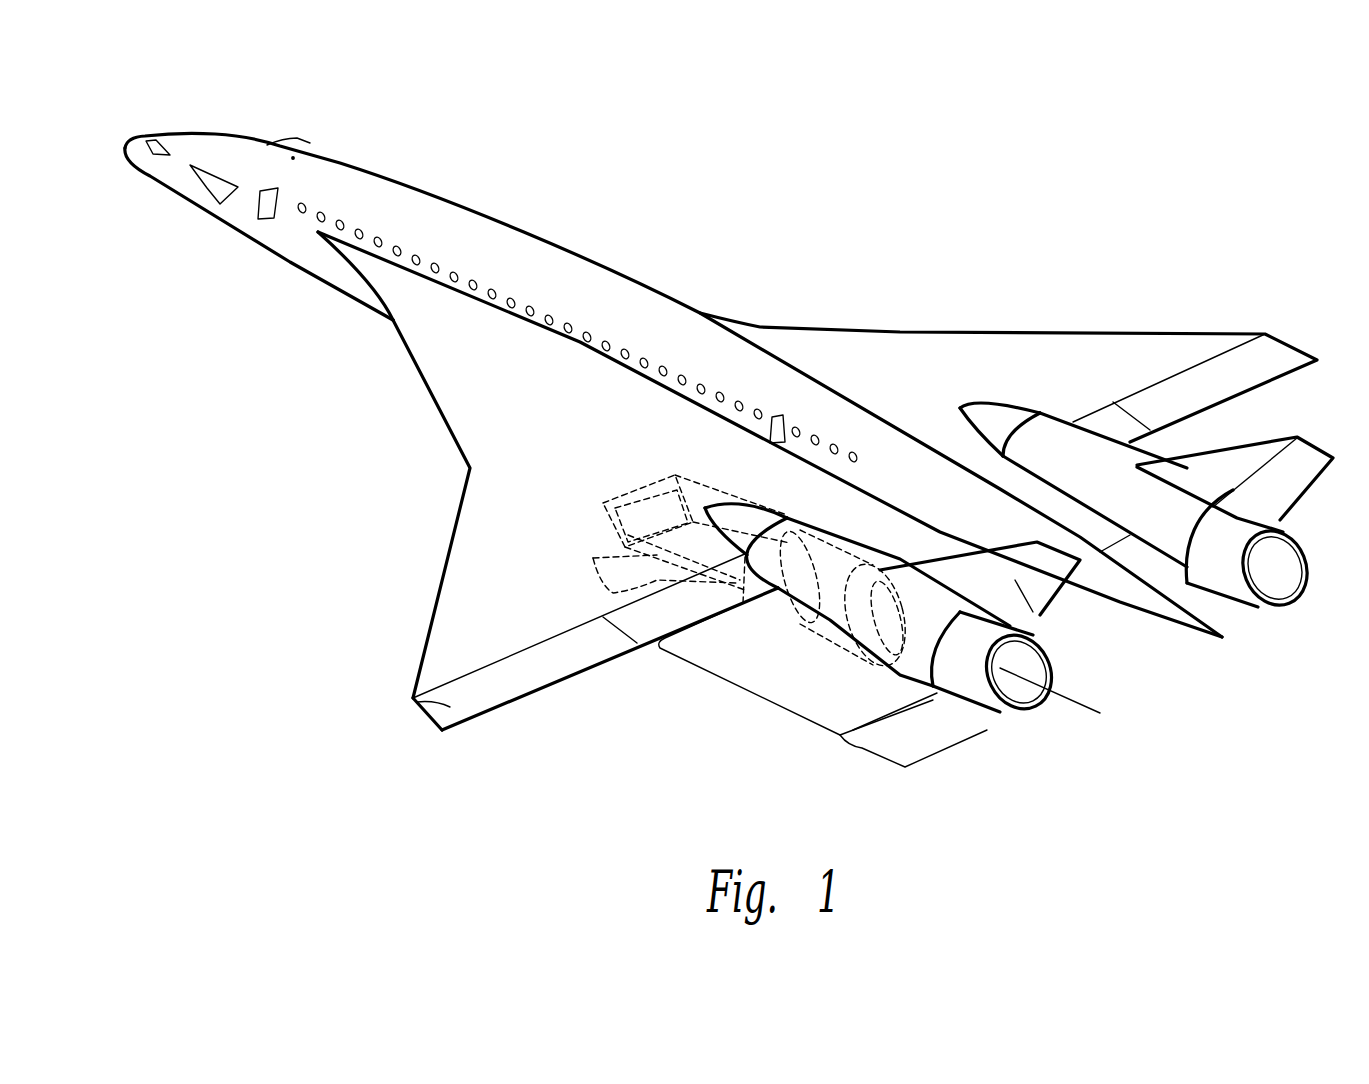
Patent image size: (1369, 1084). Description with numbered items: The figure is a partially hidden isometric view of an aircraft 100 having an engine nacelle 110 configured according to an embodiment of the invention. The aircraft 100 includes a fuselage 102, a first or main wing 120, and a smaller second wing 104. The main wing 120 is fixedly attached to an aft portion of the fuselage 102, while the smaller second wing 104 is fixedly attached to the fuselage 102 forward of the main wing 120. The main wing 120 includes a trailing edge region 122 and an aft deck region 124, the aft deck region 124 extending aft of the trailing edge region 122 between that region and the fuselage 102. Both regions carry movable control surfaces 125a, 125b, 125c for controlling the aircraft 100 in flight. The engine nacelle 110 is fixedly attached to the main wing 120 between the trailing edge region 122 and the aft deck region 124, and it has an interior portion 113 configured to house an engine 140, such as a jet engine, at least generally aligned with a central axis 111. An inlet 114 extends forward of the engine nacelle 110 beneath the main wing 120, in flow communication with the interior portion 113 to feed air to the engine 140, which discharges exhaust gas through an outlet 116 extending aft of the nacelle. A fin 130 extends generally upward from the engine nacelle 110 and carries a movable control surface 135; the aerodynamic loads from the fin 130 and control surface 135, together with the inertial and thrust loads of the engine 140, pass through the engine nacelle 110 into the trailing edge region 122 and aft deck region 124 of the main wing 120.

The aircraft 100 is at (846, 174).
The fuselage 102 is at (383, 176).
The second wing 104 is at (210, 187).
The engine nacelle 110 is at (747, 693).
The central axis 111 is at (1077, 700).
The interior portion 113 is at (867, 673).
The inlet 114 is at (625, 600).
The outlet 116 is at (872, 750).
The main wing 120 is at (469, 556).
The trailing edge region 122 is at (517, 640).
The aft deck region 124 is at (915, 542).
The movable control surface 125a is at (413, 698).
The movable control surface 125b is at (640, 627).
The movable control surface 125c is at (1093, 602).
The fin 130 is at (1067, 615).
The movable control surface 135 is at (1080, 608).
The engine 140 is at (853, 632).